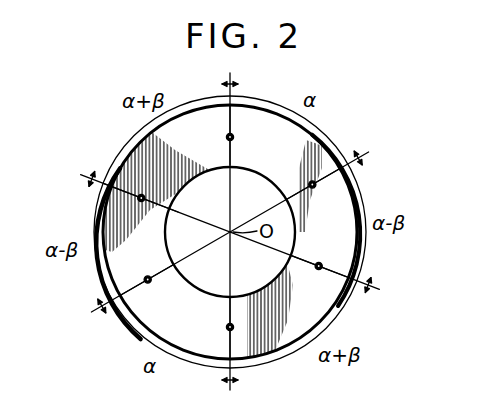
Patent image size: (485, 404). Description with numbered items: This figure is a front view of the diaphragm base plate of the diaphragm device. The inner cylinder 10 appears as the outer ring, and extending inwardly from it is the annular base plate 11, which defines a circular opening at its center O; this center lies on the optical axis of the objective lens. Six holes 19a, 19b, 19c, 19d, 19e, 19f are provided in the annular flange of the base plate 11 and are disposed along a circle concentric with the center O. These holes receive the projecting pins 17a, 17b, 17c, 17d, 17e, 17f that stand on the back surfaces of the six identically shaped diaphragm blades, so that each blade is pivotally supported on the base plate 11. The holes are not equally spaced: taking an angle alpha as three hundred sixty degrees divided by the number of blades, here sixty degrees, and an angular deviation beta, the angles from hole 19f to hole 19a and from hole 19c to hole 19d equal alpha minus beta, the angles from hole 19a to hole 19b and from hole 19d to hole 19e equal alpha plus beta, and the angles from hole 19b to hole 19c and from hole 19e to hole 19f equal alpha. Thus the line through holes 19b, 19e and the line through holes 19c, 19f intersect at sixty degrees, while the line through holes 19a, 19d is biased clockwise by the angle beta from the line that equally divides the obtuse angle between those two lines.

The inner cylinder 10 is at (262, 103).
The annular base plate 11 is at (268, 175).
The projecting pin 17a is at (140, 196).
The projecting pin 17b is at (228, 132).
The projecting pin 17c is at (313, 183).
The projecting pin 17d is at (318, 263).
The projecting pin 17e is at (227, 329).
The projecting pin 17f is at (147, 279).
The hole 19a is at (159, 192).
The hole 19b is at (233, 139).
The hole 19c is at (314, 188).
The hole 19d is at (316, 269).
The hole 19e is at (233, 330).
The hole 19f is at (149, 283).